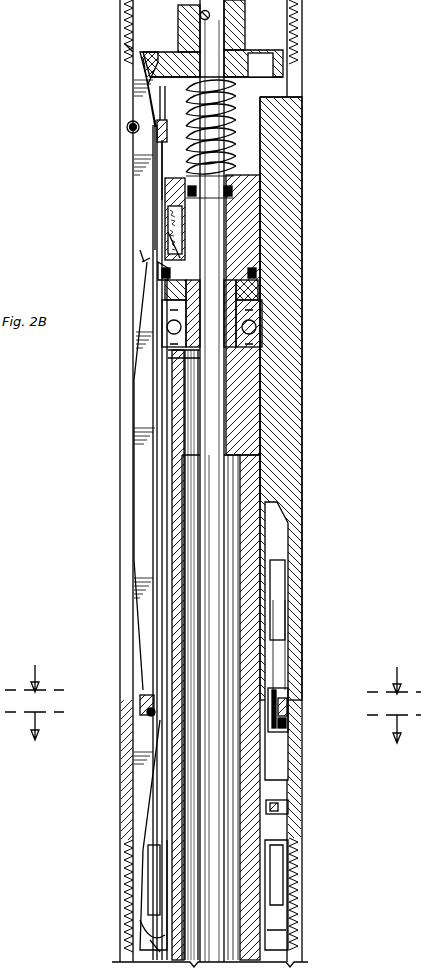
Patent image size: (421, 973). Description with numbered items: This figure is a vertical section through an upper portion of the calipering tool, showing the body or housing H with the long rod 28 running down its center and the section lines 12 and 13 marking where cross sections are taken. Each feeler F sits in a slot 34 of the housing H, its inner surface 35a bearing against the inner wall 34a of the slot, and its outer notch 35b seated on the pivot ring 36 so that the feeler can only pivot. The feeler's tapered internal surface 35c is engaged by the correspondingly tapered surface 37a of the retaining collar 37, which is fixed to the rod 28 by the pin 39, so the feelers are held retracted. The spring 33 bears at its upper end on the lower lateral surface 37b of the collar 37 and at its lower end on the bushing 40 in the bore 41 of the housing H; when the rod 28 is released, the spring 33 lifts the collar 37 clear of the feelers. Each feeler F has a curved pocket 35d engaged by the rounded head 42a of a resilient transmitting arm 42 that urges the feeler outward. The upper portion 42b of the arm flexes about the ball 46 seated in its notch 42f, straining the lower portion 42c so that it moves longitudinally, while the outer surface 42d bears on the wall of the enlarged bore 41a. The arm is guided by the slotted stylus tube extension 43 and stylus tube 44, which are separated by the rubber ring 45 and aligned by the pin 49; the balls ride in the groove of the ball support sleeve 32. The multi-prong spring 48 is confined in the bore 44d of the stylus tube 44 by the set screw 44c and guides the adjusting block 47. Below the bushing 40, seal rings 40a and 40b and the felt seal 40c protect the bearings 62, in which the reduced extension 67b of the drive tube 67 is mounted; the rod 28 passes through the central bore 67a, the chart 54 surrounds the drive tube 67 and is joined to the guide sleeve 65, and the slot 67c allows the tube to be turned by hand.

The rod 28 is at (212, 27).
The ball support sleeve 32 is at (278, 727).
The spring 33 is at (262, 168).
The slots 34 is at (125, 182).
The inner wall 34a is at (160, 165).
The inner surface 35a is at (157, 150).
The outer notch 35b is at (130, 124).
The internal surface 35c is at (124, 50).
The inner pocket 35d is at (168, 240).
The pivot ring 36 is at (130, 128).
The retaining collar 37 is at (178, 33).
The tapered surface 37a is at (283, 63).
The lower lateral surface 37b is at (128, 80).
The pin 39 is at (200, 16).
The bushing 40 is at (250, 228).
The seal ring 40a is at (254, 275).
The seal ring 40b is at (258, 210).
The felt seal 40c is at (167, 206).
The bore 41 is at (272, 192).
The enlarged bore portion 41a is at (282, 540).
The transmitting arm 42 is at (133, 498).
The curved head 42a is at (178, 252).
The upper portion 42b is at (137, 470).
The lower portion 42c is at (125, 800).
The outer surface 42d is at (130, 915).
The notch 42f is at (140, 702).
The stylus tube extension 43 is at (274, 578).
The stylus tube 44 is at (274, 745).
The set screw 44c is at (288, 803).
The bore 44d is at (284, 868).
The rubber ring 45 is at (278, 700).
The ball 46 is at (148, 712).
The adjusting block 47 is at (145, 937).
The multi-prong spring 48 is at (152, 828).
The aligning pin 49 is at (276, 688).
The chart 54 is at (165, 608).
The bearings 62 is at (258, 328).
The guide sleeve 65 is at (262, 388).
The drive tube 67 is at (175, 392).
The central bore 67a is at (168, 375).
The upper reduced diameter extension 67b is at (258, 303).
The slot 67c is at (160, 285).
The feeler F is at (142, 262).
The housing H is at (290, 417).
The section line 12- 12 is at (213, 671).
The section line 13- 13 is at (213, 748).